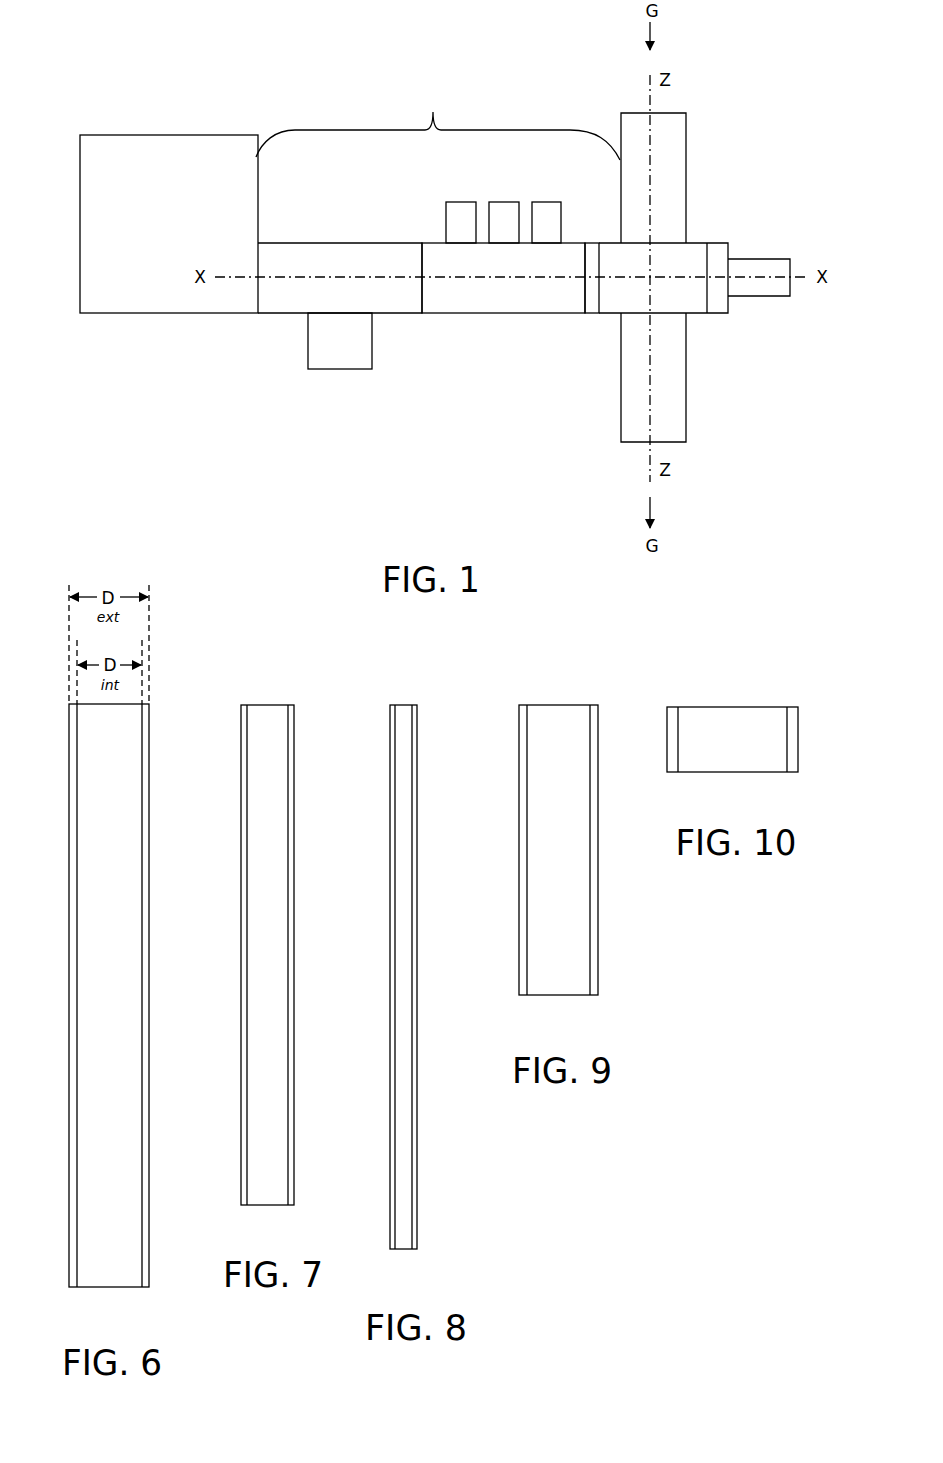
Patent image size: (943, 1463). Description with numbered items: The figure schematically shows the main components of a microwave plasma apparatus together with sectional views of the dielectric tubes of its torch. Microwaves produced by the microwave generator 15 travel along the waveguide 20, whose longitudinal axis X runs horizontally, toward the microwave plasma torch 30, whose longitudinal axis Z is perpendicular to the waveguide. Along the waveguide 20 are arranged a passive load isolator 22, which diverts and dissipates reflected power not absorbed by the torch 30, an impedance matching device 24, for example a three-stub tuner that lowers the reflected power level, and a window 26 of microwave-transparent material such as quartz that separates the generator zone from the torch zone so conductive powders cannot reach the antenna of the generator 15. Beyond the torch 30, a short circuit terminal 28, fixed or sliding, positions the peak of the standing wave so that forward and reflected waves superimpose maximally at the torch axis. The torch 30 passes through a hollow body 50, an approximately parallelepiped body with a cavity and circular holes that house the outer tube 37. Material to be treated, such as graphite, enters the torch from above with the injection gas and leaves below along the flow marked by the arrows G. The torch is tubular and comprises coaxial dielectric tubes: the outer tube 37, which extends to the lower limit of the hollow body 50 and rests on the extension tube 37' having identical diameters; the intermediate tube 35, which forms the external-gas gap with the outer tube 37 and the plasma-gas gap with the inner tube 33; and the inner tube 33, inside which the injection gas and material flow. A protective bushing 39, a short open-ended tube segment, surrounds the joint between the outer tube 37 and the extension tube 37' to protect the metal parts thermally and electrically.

In FIG. 1, the microwave generator 15 is at (160, 172).
In FIG. 1, the waveguide 20 is at (438, 123).
In FIG. 1, the passive load isolator 22 is at (282, 295).
In FIG. 1, the impedance matching device 24 is at (490, 298).
In FIG. 1, the window 26 is at (592, 303).
In FIG. 1, the short circuit terminal 28 is at (763, 272).
In FIG. 1, the microwave plasma torch 30 is at (702, 186).
In FIG. 1, the hollow body 50 is at (699, 320).
In FIG. 8, the inner tube 33 is at (403, 718).
In FIG. 7, the intermediate tube 35 is at (268, 718).
In FIG. 6, the outer tube 37 is at (84, 995).
In FIG. 9, the extension tube 37' is at (560, 824).
In FIG. 10, the protective bushing 39 is at (728, 728).